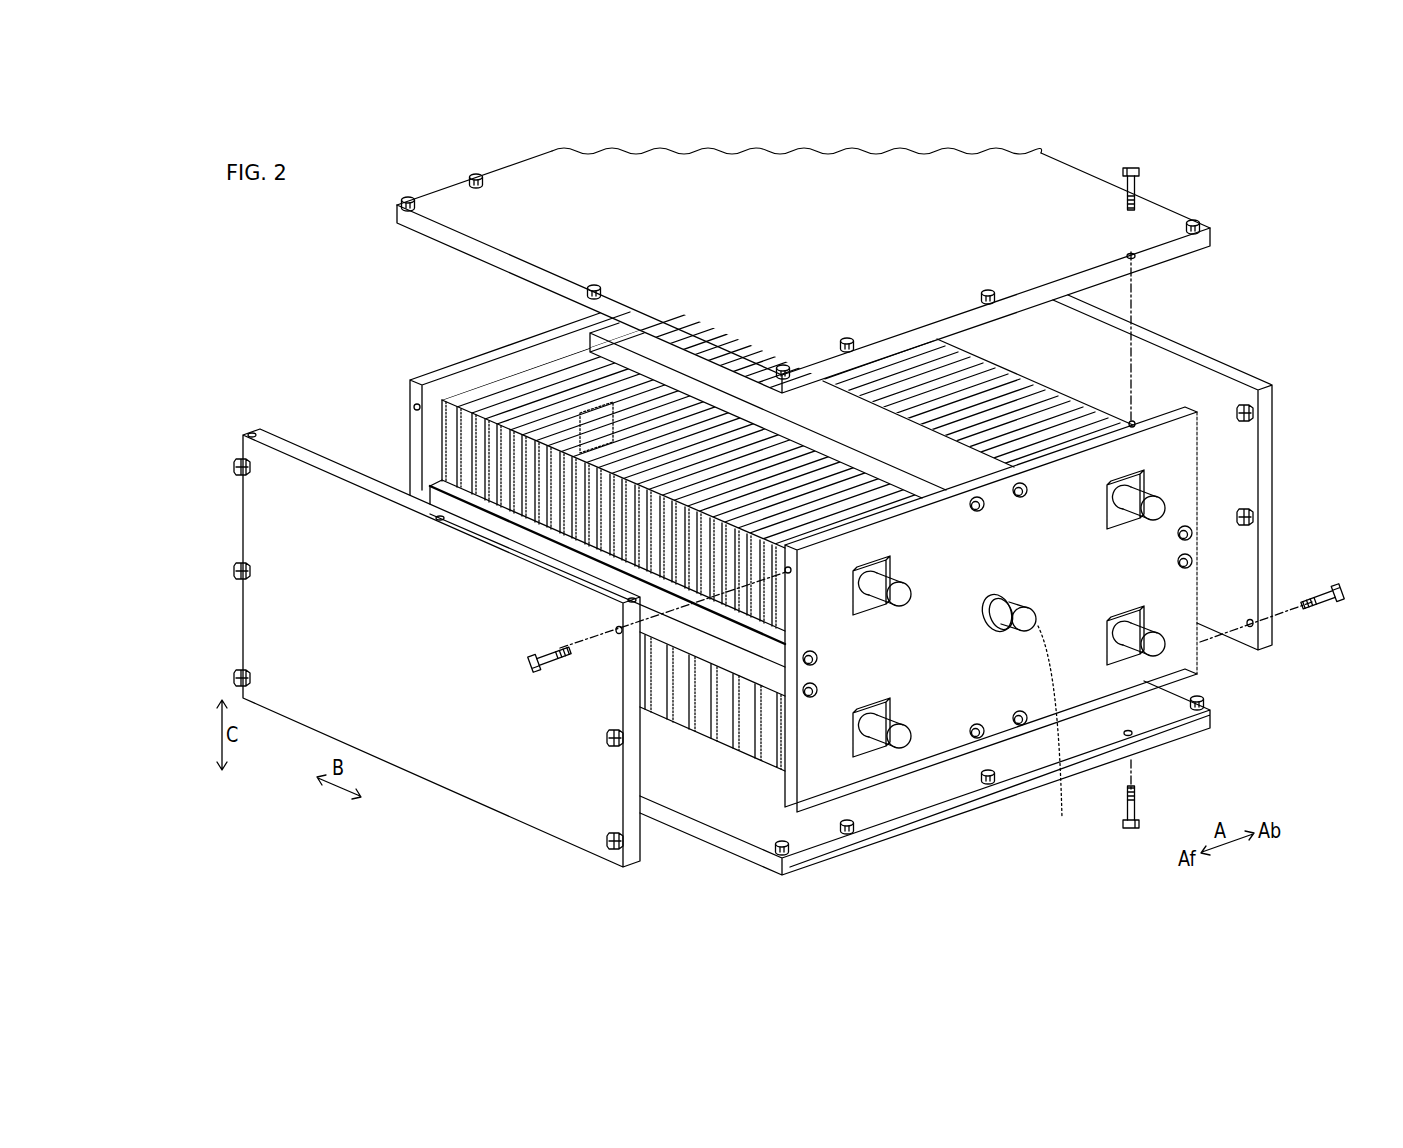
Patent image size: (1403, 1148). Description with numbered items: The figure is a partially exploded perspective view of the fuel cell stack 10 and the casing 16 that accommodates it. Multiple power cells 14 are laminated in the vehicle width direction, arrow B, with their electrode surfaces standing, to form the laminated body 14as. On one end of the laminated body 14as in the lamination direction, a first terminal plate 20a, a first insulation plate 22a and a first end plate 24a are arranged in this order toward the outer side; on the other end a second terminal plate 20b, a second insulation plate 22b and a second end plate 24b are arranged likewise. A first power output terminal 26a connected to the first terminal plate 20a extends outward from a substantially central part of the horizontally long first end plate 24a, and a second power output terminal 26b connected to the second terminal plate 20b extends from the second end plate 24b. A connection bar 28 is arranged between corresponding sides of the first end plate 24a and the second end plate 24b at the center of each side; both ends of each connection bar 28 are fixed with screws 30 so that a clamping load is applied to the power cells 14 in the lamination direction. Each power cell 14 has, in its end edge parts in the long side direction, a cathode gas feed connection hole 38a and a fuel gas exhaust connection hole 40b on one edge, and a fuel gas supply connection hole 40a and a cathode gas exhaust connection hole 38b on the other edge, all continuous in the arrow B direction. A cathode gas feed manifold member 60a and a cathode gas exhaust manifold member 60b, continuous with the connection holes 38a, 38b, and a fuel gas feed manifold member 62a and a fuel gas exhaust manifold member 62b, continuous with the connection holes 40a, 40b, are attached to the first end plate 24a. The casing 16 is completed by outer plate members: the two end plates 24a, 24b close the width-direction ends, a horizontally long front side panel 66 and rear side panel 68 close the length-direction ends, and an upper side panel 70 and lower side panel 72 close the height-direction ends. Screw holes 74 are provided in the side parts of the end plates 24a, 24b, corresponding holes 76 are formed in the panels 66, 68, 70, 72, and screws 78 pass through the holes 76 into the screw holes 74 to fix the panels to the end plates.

The fuel cell stack 10 is at (334, 217).
The power cell 14 is at (759, 560).
The laminated body 14as is at (759, 560).
The casing 16 is at (789, 268).
The first terminal plate 20a is at (758, 755).
The second terminal plate 20b is at (472, 408).
The first insulation plate 22a is at (773, 772).
The second insulation plate 22b is at (455, 398).
The first end plate 24a is at (1200, 432).
The second end plate 24b is at (408, 392).
The first power output terminal 26a is at (1064, 738).
The second power output terminal 26b is at (590, 430).
The connection bar 28 is at (585, 342).
The screw 30 is at (977, 512).
The cathode gas feed connection hole 38a is at (1166, 509).
The cathode gas exhaust connection hole 38b is at (900, 748).
The fuel gas supply connection hole 40a is at (1026, 632).
The fuel gas exhaust connection hole 40b is at (1155, 656).
The cathode gas feed manifold member 60a is at (1244, 499).
The cathode gas exhaust manifold member 60b is at (898, 719).
The fuel gas feed manifold member 62a is at (1015, 735).
The fuel gas exhaust manifold member 62b is at (1171, 701).
The front side panel 66 is at (548, 832).
The rear side panel 68 is at (1243, 372).
The upper side panel 70 is at (1102, 190).
The lower side panel 72 is at (1213, 718).
The screw hole 74 is at (787, 574).
The hole 76 is at (1133, 260).
The screw 78 is at (1141, 172).